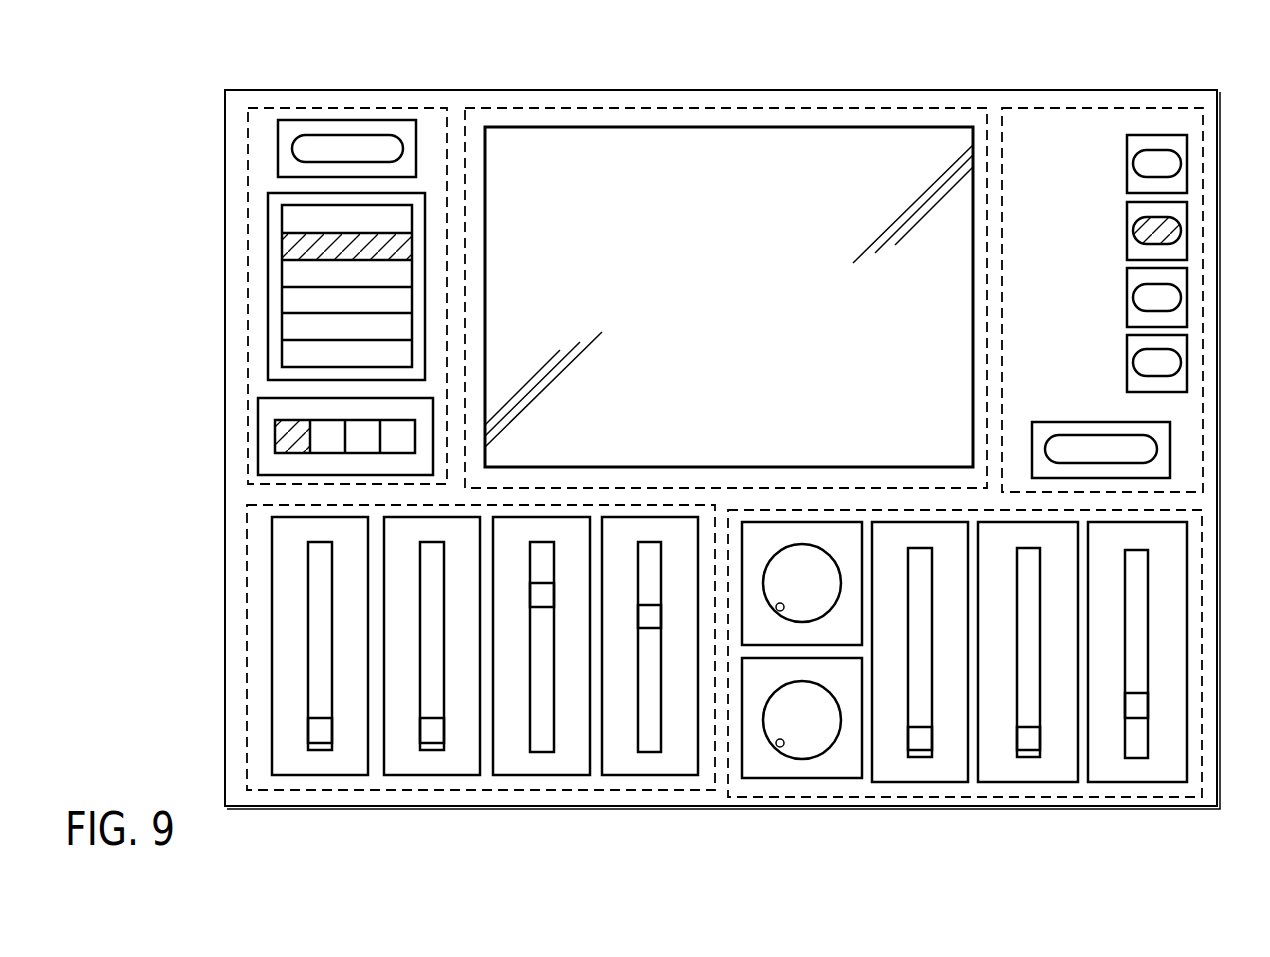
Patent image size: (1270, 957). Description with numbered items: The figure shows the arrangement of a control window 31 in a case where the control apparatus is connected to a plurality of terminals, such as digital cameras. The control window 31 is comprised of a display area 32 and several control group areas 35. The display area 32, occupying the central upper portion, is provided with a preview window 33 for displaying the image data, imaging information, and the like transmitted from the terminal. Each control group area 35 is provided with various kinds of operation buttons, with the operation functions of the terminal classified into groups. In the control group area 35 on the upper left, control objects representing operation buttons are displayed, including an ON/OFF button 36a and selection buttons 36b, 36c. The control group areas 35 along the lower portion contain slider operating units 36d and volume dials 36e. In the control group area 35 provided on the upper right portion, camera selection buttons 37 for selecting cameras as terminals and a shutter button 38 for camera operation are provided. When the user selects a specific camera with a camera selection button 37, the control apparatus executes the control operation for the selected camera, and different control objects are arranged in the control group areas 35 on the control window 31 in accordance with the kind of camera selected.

The control window 31 is at (878, 90).
The display area 32 is at (558, 117).
The preview window 33 is at (695, 170).
The control group area 35 is at (263, 141).
The ON/OFF button 36a is at (280, 168).
The selection button 36b is at (275, 268).
The selection button 36c is at (270, 433).
The slider operating unit 36d is at (358, 777).
The volume dial 36e is at (770, 770).
The camera selection button 37 is at (1182, 184).
The shutter button 38 is at (1163, 457).